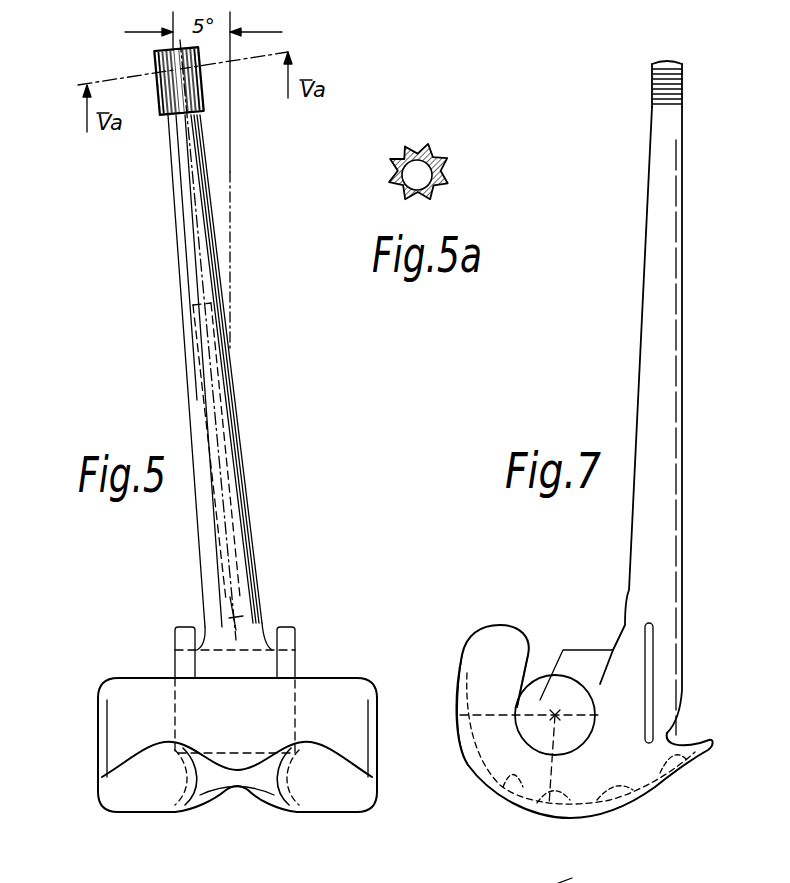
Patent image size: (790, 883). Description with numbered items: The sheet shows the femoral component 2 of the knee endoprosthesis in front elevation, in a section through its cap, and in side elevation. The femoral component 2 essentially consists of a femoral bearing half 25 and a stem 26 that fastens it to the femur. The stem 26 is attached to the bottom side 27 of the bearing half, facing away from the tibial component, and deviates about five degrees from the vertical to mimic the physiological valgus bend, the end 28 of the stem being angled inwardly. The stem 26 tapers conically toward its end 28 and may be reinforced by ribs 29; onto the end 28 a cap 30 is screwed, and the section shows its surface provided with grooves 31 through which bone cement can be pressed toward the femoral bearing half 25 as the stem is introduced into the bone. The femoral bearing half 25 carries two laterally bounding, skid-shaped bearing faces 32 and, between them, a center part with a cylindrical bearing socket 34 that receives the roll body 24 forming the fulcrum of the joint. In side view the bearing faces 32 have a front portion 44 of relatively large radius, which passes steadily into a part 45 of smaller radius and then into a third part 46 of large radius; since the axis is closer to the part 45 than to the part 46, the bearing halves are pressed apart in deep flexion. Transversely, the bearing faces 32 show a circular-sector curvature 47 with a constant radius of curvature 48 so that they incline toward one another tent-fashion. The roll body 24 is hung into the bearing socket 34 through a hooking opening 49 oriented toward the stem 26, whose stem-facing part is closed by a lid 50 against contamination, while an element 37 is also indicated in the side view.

In FIG. 5, the femoral component 2 is at (238, 413).
In FIG. 7, the femoral component 2 is at (656, 325).
In FIG. 7, the roll body 24 is at (578, 723).
In FIG. 5, the femoral bearing half 25 is at (126, 710).
In FIG. 5, the stem 26 is at (203, 253).
In FIG. 5, the bottom side 27 is at (167, 678).
In FIG. 5, the end of the stem 28 is at (167, 49).
In FIG. 5, the ribs 29 is at (212, 346).
In FIG. 5, the cap 30 is at (200, 95).
In FIG. 5a, the cap 30 is at (392, 163).
In FIG. 5a, the grooves 31 is at (442, 173).
In FIG. 7, the bearing faces 32 is at (581, 872).
In FIG. 7, the cylindrical bearing socket 34 is at (528, 732).
In FIG. 7, the slot 37 is at (680, 690).
In FIG. 7, the portion of relatively larger radius of curvature 44 is at (653, 787).
In FIG. 7, the part with increasing curvature 45 is at (541, 810).
In FIG. 7, the third part 46 is at (458, 714).
In FIG. 5, the curvature 47 is at (167, 806).
In FIG. 5, the radius of curvature 48 is at (235, 787).
In FIG. 7, the hooking opening 49 is at (538, 667).
In FIG. 7, the lid 50 is at (585, 662).